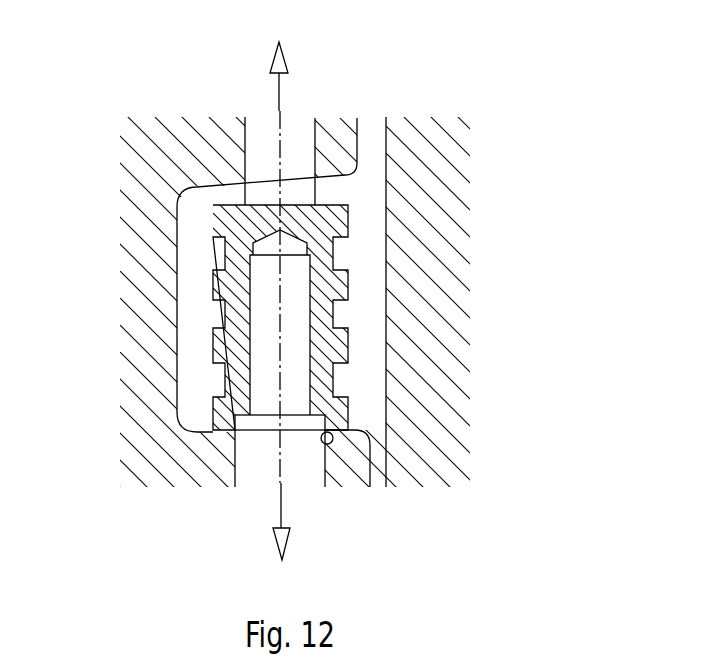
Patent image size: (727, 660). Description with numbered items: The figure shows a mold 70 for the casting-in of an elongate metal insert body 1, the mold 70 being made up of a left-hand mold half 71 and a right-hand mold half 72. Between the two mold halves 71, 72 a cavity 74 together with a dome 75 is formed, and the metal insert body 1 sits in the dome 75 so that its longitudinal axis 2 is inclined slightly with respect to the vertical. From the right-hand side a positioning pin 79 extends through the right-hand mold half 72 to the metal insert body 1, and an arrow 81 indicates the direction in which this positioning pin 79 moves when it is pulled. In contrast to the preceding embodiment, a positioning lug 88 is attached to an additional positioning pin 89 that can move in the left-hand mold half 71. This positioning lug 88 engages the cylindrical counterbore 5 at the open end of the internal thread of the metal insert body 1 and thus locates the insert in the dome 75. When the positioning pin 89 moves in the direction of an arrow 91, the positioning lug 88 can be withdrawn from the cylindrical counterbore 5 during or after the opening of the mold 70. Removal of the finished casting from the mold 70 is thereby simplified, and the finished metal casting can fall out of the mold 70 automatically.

The metal insert body 1 is at (223, 287).
The longitudinal axis 2 is at (280, 383).
The cylindrical counterbore 5 is at (332, 442).
The mold 70 is at (492, 110).
The left-hand mold half 71 is at (155, 395).
The right-hand mold half 72 is at (437, 213).
The cavity 74 is at (379, 463).
The dome 75 is at (198, 248).
The positioning pin 79 is at (299, 152).
The arrow 81 is at (279, 111).
The positioning lug 88 is at (270, 424).
The positioning pin 89 is at (255, 449).
The arrow 91 is at (281, 483).